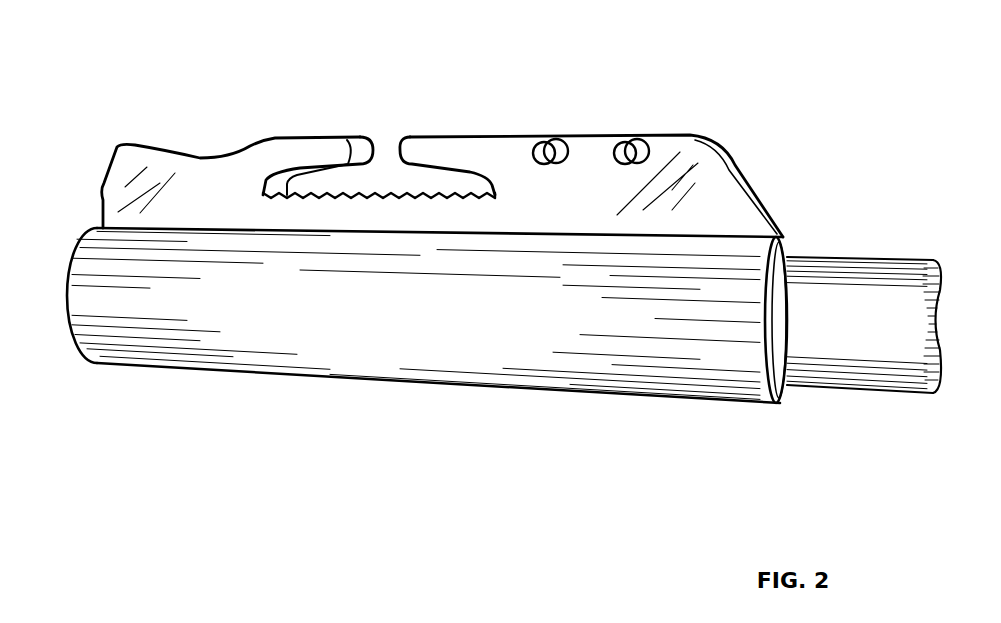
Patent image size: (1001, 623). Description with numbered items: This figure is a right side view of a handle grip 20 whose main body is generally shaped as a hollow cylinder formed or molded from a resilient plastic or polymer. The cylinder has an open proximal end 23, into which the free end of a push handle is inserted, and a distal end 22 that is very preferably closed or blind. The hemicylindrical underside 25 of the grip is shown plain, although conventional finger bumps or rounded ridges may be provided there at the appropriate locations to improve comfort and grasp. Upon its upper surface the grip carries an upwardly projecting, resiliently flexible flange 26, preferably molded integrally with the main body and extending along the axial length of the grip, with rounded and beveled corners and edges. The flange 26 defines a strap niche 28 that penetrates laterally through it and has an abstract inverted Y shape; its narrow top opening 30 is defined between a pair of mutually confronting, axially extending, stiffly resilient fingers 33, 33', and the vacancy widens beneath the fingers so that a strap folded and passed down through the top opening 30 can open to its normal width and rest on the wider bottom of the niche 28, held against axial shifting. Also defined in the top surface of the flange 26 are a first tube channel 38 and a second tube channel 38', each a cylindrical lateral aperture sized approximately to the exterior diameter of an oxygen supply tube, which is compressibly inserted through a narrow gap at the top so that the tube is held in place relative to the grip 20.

The handle grip 20 is at (482, 243).
The distal end 22 is at (68, 328).
The open proximal end 23 is at (790, 393).
The hemicylindrical underside 25 is at (560, 393).
The flange 26 is at (747, 158).
The strap niche 28 is at (383, 177).
The top opening 30 is at (383, 150).
The finger 33 is at (318, 146).
The finger 33' is at (457, 145).
The tube channel 38 is at (565, 117).
The tube channel 38' is at (648, 117).